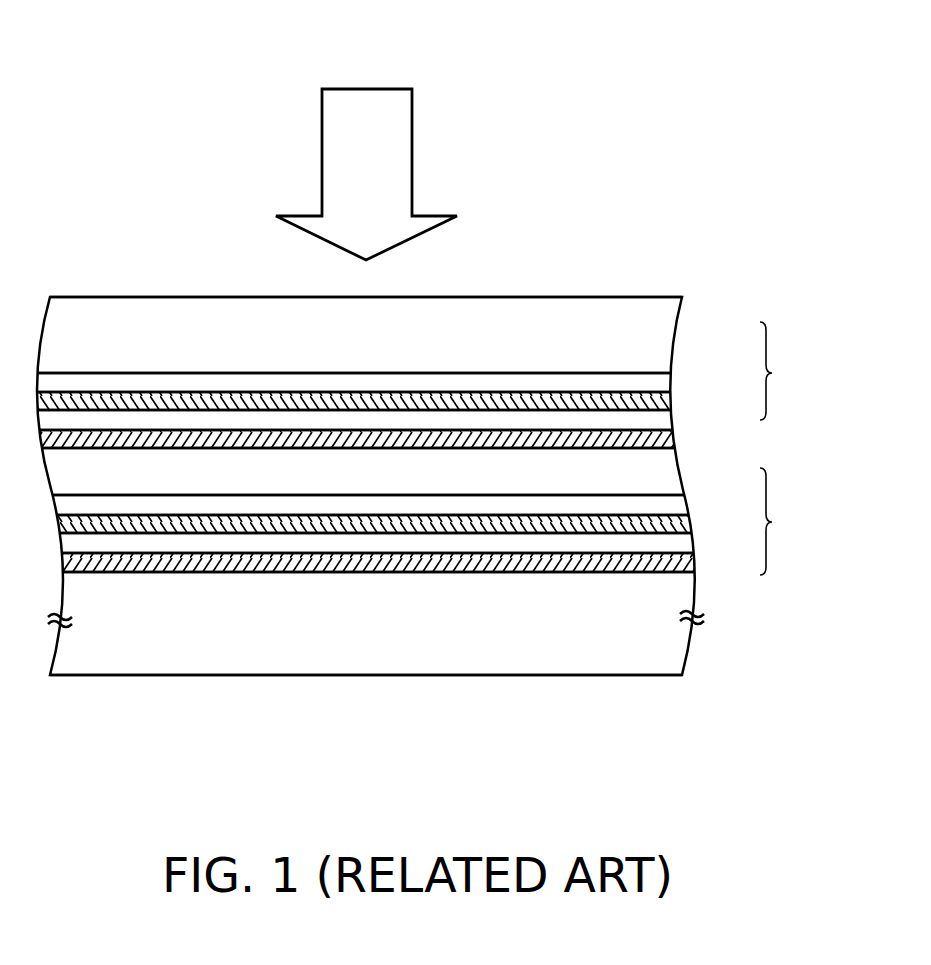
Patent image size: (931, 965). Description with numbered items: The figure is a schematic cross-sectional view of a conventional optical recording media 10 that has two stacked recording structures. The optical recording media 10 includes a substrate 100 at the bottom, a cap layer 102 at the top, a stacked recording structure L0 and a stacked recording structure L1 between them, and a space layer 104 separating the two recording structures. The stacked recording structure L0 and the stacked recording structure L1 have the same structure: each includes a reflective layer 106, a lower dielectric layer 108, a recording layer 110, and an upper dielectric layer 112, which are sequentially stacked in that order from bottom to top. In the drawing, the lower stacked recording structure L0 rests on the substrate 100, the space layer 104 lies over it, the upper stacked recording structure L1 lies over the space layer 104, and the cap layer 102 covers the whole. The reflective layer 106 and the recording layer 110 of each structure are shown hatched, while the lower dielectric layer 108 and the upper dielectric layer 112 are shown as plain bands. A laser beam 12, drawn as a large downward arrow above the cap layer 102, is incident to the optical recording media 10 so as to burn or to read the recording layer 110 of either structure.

The laser beam 12 is at (393, 150).
The optical recording media 10 is at (745, 748).
The cap layer 102 is at (672, 327).
The upper dielectric layer 112 is at (662, 380).
The recording layer 110 is at (662, 400).
The lower dielectric layer 108 is at (660, 418).
The reflective layer 106 is at (665, 437).
The space layer 104 is at (668, 467).
The substrate 100 is at (675, 592).
The stacked recording structure L1 is at (776, 371).
The stacked recording structure L0 is at (776, 521).